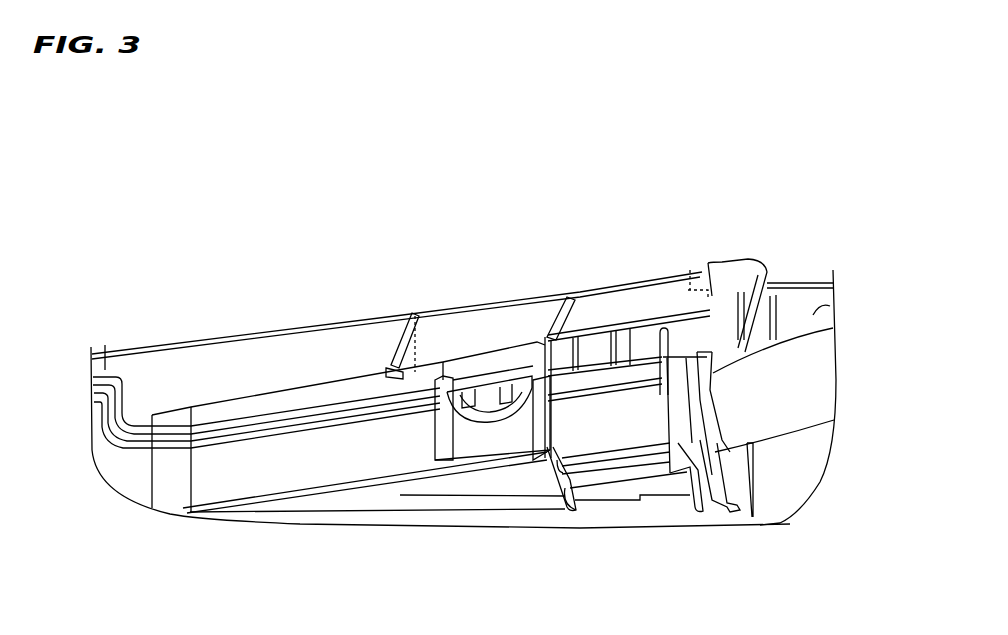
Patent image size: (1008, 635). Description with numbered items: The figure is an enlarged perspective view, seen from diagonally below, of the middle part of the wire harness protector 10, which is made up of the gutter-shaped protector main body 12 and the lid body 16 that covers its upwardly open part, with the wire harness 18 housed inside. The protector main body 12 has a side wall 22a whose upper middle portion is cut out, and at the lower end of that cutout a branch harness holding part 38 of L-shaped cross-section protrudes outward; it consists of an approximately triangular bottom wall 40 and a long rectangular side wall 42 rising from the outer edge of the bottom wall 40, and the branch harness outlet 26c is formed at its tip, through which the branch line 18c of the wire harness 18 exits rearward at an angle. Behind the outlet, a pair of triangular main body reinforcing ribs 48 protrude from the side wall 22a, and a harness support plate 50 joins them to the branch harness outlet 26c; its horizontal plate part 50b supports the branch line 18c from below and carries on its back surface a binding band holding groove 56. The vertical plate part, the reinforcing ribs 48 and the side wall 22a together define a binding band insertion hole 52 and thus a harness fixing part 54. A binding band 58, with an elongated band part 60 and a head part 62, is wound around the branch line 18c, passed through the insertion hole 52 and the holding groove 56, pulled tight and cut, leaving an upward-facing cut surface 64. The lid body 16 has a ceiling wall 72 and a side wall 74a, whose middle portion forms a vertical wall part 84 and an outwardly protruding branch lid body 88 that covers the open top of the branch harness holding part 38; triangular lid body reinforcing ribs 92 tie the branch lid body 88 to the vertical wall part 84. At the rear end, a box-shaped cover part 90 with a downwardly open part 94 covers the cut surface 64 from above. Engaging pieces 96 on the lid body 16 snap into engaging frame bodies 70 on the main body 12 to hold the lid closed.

The wire harness protector 10 is at (507, 227).
The protector main body 12 is at (423, 537).
The lid body 16 is at (503, 273).
The wire harness 18 is at (793, 313).
The branch line 18c is at (808, 378).
The side wall 22a is at (98, 440).
The branch harness outlet 26c is at (557, 420).
The branch harness holding part 38 is at (298, 560).
The bottom wall 40 is at (383, 445).
The side wall 42 is at (383, 488).
The main body reinforcing rib 48 is at (738, 340).
The harness support plate 50 is at (597, 508).
The horizontal plate part 50b is at (620, 488).
The binding band insertion hole 52 is at (723, 505).
The harness fixing part 54 is at (712, 512).
The binding band holding groove 56 is at (687, 468).
The binding band 58 is at (707, 385).
The band part 60 is at (688, 422).
The head part 62 is at (685, 343).
The cut surface 64 is at (690, 270).
The engaging frame body 70 is at (478, 372).
The ceiling wall 72 is at (335, 325).
The side wall 74a is at (104, 362).
The vertical wall part 84 is at (233, 365).
The branch lid body 88 is at (268, 397).
The cover part 90 is at (712, 278).
The lid body reinforcing rib 92 is at (408, 352).
The downwardly open part 94 is at (652, 327).
The engaging piece 96 is at (490, 403).